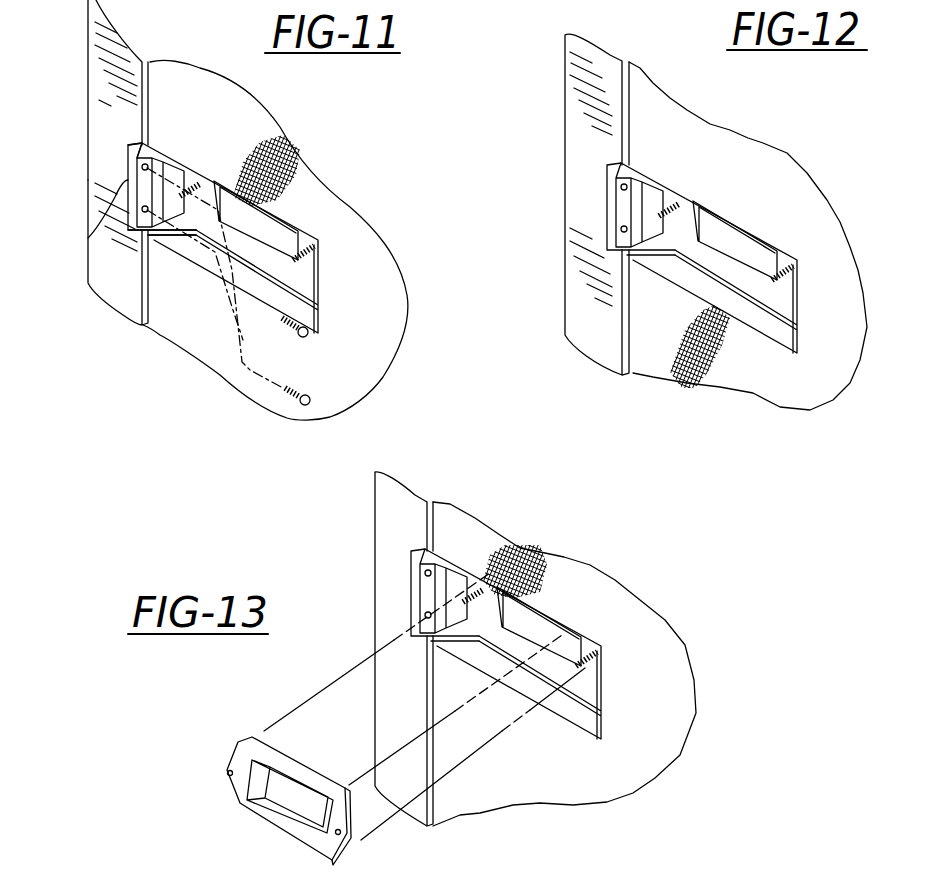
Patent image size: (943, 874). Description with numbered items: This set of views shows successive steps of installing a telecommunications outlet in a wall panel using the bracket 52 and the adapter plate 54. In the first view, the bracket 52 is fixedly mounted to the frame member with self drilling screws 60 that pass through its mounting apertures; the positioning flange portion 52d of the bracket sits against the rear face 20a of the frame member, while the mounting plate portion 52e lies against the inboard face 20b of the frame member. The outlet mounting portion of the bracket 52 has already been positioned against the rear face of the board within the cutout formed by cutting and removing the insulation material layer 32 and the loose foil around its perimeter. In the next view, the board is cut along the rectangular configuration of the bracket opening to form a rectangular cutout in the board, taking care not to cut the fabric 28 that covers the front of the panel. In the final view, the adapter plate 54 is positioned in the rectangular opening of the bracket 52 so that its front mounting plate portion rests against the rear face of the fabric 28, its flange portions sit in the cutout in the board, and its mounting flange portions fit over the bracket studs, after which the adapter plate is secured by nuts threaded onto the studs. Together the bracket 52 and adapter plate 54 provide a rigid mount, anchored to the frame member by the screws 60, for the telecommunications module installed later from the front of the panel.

In FIG. 11, the rear face of the frame member 20a is at (118, 283).
In FIG. 11, the inboard face of the frame member 20b is at (147, 87).
In FIG. 11, the bracket 52 is at (205, 265).
In FIG. 12, the bracket 52 is at (600, 180).
In FIG. 13, the bracket 52 is at (403, 587).
In FIG. 11, the positioning flange portion 52d is at (88, 238).
In FIG. 11, the mounting plate portion 52e is at (147, 143).
In FIG. 11, the insulation material layer 32 is at (366, 302).
In FIG. 12, the insulation material layer 32 is at (773, 387).
In FIG. 13, the insulation material layer 32 is at (553, 781).
In FIG. 11, the self drilling screws 60 is at (307, 337).
In FIG. 12, the fabric 28 is at (738, 244).
In FIG. 13, the adapter plate 54 is at (262, 834).